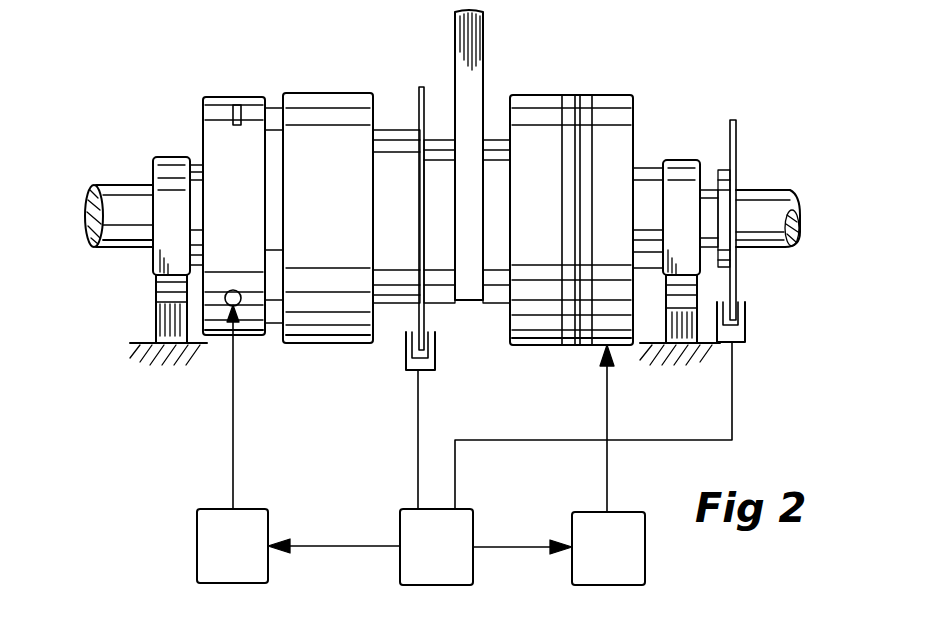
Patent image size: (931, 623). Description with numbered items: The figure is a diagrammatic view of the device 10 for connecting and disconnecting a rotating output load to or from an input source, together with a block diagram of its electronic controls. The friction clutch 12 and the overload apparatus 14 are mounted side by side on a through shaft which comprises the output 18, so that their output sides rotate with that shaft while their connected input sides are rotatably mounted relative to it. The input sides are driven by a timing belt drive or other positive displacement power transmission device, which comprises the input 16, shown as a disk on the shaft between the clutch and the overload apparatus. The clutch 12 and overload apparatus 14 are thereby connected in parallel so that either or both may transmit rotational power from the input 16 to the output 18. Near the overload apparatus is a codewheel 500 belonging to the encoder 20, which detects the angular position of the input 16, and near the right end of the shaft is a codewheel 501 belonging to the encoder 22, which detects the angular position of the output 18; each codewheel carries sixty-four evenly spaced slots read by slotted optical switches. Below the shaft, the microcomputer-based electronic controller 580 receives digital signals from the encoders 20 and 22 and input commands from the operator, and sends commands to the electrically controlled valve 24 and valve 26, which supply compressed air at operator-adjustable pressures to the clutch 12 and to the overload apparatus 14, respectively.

The device 10 is at (171, 102).
The friction clutch 12 is at (545, 95).
The overload apparatus 14 is at (313, 93).
The input 16 is at (483, 52).
The output 18 is at (110, 187).
The encoder 20 is at (405, 366).
The encoder 22 is at (748, 318).
The valve 24 is at (630, 560).
The valve 26 is at (255, 560).
The codewheel 500 is at (419, 92).
The codewheel 501 is at (738, 128).
The electronic controller 580 is at (463, 560).